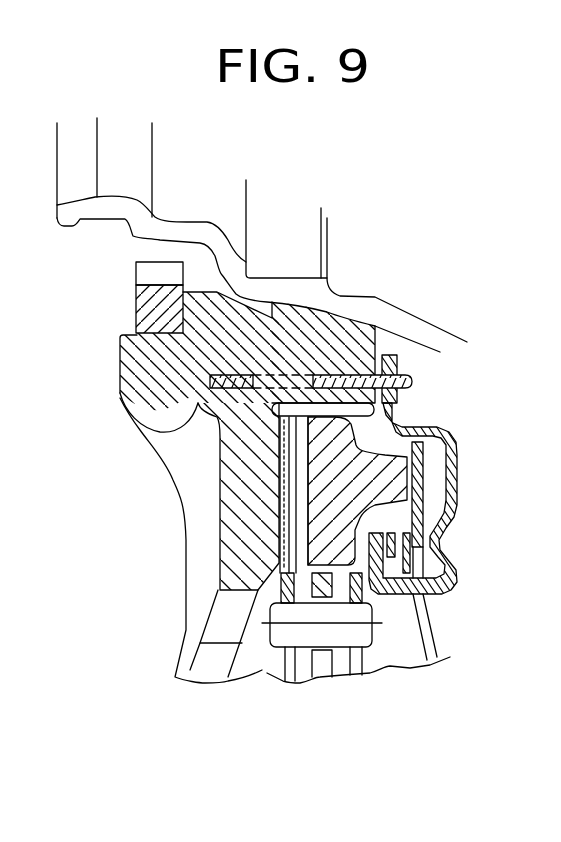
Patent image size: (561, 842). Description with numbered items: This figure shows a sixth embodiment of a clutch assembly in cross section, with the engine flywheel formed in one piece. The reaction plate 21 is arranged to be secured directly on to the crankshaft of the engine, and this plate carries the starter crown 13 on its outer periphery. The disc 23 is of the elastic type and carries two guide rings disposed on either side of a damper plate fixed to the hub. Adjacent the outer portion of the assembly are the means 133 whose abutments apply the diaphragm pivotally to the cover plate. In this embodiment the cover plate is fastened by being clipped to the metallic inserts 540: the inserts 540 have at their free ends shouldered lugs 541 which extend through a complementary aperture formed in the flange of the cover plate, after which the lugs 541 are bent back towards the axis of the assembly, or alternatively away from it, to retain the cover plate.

The starter crown 13 is at (136, 295).
The reaction plate 21 is at (147, 433).
The disc 23 is at (283, 663).
The means applying the diaphragm pivotally to the cover plate 133 is at (453, 567).
The inserts 540 is at (360, 318).
The shouldered lugs 541 is at (413, 383).